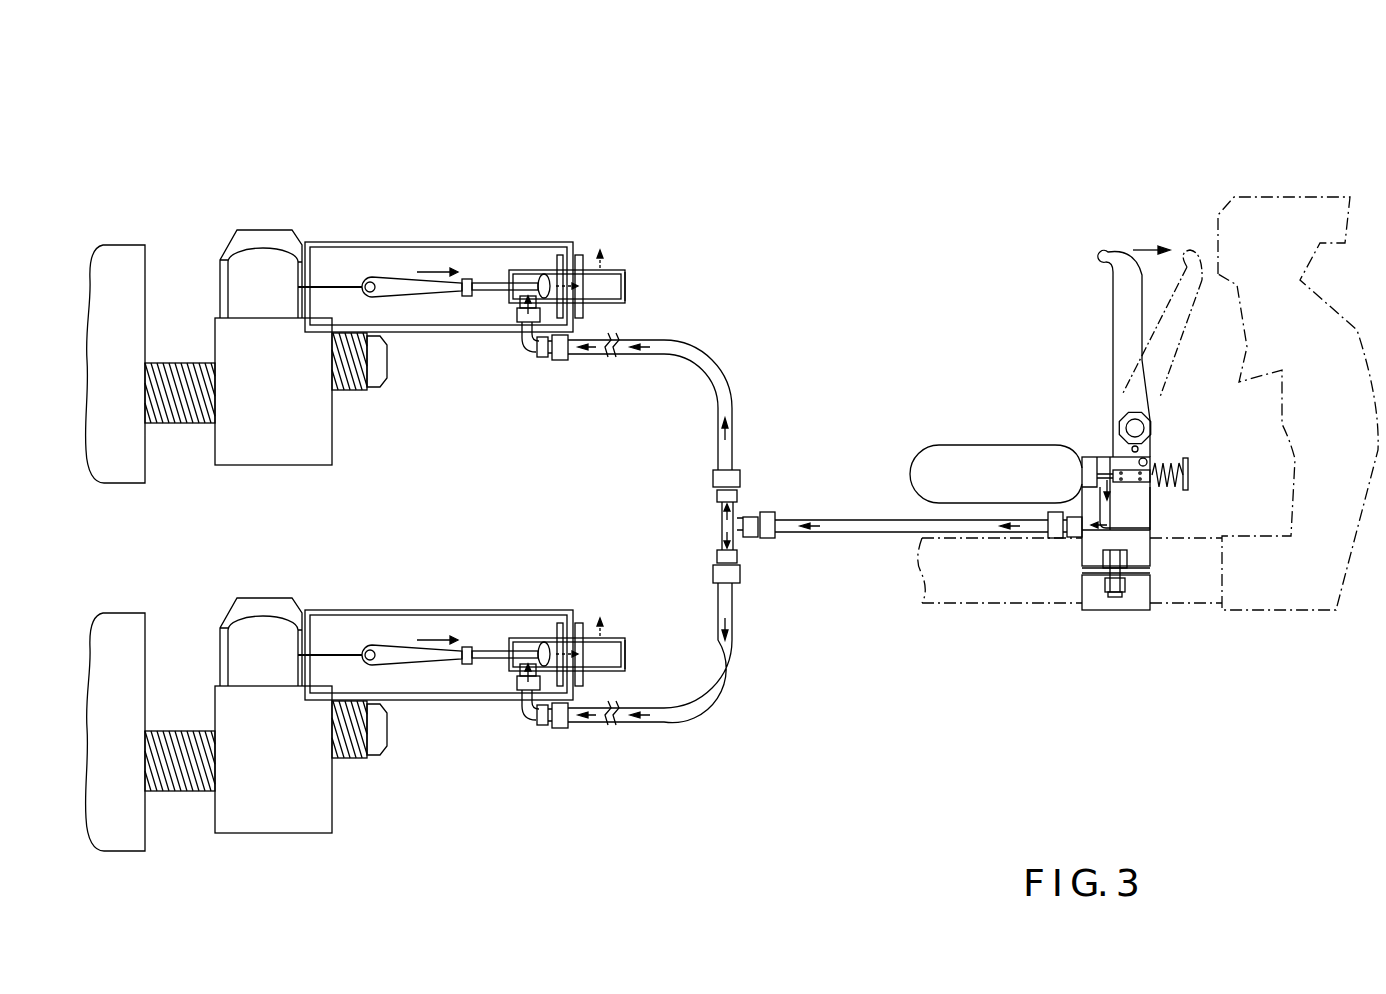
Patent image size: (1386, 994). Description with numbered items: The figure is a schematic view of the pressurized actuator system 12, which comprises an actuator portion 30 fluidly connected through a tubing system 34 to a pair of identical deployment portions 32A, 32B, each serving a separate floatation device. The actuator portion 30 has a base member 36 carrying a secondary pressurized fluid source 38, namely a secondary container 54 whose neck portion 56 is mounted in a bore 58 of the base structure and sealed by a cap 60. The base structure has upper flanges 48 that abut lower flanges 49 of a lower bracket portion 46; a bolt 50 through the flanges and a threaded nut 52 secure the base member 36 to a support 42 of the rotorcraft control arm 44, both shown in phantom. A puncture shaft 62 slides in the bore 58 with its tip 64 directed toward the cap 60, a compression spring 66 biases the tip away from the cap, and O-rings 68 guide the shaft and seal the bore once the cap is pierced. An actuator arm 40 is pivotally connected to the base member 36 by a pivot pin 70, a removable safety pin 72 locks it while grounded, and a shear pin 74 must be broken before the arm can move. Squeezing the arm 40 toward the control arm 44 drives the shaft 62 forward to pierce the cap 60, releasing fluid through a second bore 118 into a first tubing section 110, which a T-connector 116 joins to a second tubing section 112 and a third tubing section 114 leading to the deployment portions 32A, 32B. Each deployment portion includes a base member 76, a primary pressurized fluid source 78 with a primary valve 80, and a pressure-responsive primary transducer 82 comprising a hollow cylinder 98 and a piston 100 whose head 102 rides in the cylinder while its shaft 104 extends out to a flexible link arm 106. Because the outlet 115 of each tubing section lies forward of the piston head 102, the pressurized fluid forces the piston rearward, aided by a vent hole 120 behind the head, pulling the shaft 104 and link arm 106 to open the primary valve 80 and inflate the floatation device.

The pressurized actuator system 12 is at (775, 188).
The actuator portion 30 is at (995, 292).
The deployment portion 32A is at (440, 205).
The deployment portion 32B is at (440, 573).
The tubing system 34 is at (815, 494).
The base member 36 is at (1158, 525).
The secondary pressurized fluid source 38 is at (982, 455).
The actuator arm 40 is at (1198, 270).
The support 42 is at (1082, 600).
The control arm 44 is at (1342, 355).
The lower bracket portion 46 is at (1135, 600).
The upper flanges 48 is at (1085, 575).
The lower flanges 49 is at (1100, 592).
The bolt 50 is at (1152, 570).
The threaded nut 52 is at (1110, 606).
The secondary container 54 is at (933, 455).
The neck portion 56 is at (1057, 455).
The bore 58 is at (1084, 455).
The cap 60 is at (1088, 478).
The puncture shaft 62 is at (1155, 476).
The tip 64 is at (1110, 440).
The compression spring 66 is at (1190, 470).
The O-rings 68 is at (1160, 500).
The pivot pin 70 is at (1165, 390).
The safety pin 72 is at (1138, 426).
The shear pin 74 is at (1160, 466).
The base member 76 is at (330, 245).
The primary pressurized fluid source 78 is at (135, 245).
The primary valve 80 is at (258, 232).
The primary transducer 82 is at (642, 283).
The cylinder 98 is at (612, 325).
The piston 100 is at (490, 330).
The head 102 is at (530, 268).
The shaft 104 is at (505, 300).
The link arm 106 is at (333, 283).
The first tubing section 110 is at (842, 537).
The second tubing section 112 is at (708, 360).
The third tubing section 114 is at (722, 692).
The outlet 115 is at (526, 324).
The T-connector 116 is at (720, 528).
The second bore 118 is at (1152, 540).
The vent hole 120 is at (604, 262).